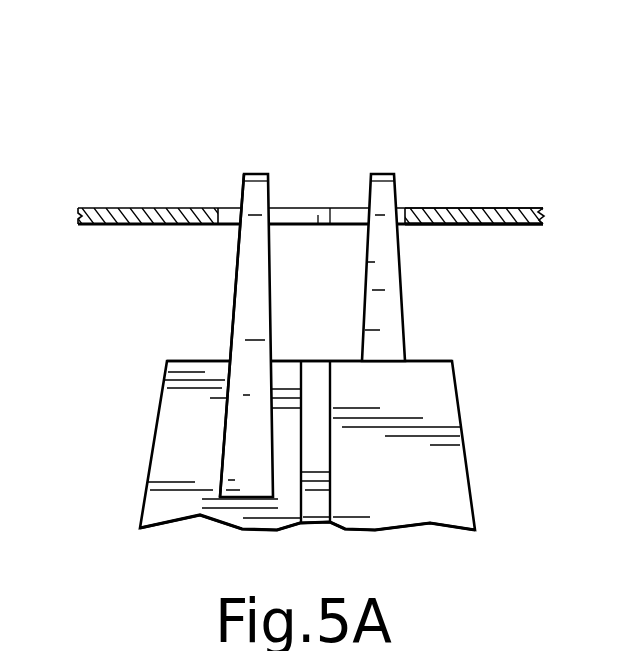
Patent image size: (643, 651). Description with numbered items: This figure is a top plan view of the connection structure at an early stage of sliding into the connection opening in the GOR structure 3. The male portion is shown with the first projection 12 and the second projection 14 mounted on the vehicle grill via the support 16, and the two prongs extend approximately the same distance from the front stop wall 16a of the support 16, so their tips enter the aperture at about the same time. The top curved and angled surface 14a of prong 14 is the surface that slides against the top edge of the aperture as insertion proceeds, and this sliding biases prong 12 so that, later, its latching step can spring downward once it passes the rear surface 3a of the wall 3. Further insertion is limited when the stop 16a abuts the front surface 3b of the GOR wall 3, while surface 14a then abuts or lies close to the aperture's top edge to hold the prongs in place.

The GOR structure 3 is at (556, 220).
The rear surface of the wall 3a is at (500, 208).
The front surface of the GOR wall 3b is at (440, 228).
The first projection 12 is at (378, 141).
The second projection 14 is at (256, 144).
The top curved and angled surface 14a is at (250, 251).
The support 16 is at (432, 482).
The front stop wall 16a is at (193, 361).